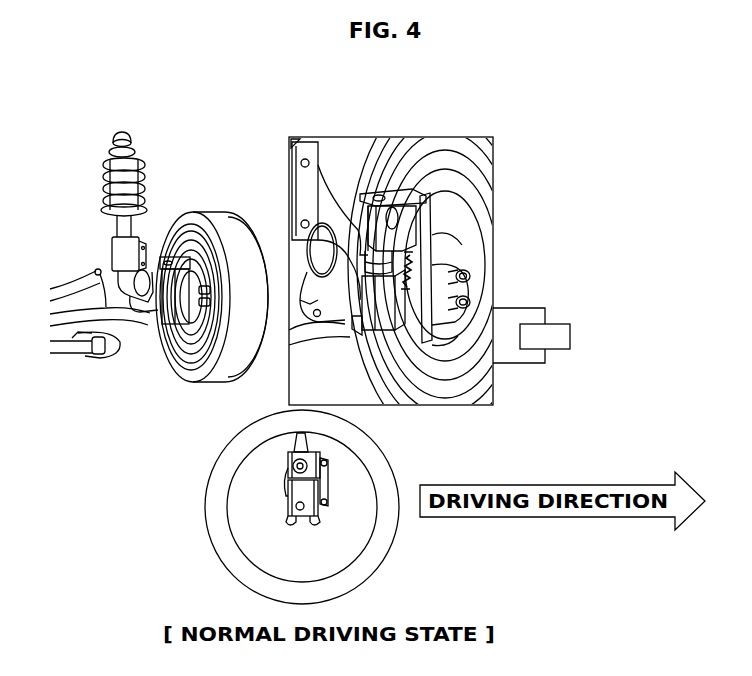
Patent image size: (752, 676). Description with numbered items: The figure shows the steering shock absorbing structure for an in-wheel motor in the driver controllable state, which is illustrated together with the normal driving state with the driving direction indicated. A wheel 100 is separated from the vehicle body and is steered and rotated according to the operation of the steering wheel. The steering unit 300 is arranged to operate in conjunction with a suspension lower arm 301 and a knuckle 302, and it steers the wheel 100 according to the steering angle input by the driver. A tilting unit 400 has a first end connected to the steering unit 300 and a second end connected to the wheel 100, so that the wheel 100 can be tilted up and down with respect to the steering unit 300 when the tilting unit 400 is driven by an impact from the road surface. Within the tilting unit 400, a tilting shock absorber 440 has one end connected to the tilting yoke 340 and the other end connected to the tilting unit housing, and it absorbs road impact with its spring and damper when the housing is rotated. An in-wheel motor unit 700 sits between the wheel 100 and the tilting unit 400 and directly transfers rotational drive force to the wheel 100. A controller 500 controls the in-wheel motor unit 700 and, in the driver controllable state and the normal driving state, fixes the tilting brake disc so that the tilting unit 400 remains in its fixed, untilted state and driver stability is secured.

The wheel 100 is at (208, 220).
The steering unit 300 is at (345, 315).
The suspension lower arm 301 is at (73, 333).
The knuckle 302 is at (138, 254).
The tilting yoke 340 is at (362, 195).
The tilting unit 400 is at (420, 297).
The tilting shock absorber 440 is at (414, 276).
The controller 500 is at (558, 323).
The in-wheel motor unit 700 is at (187, 340).